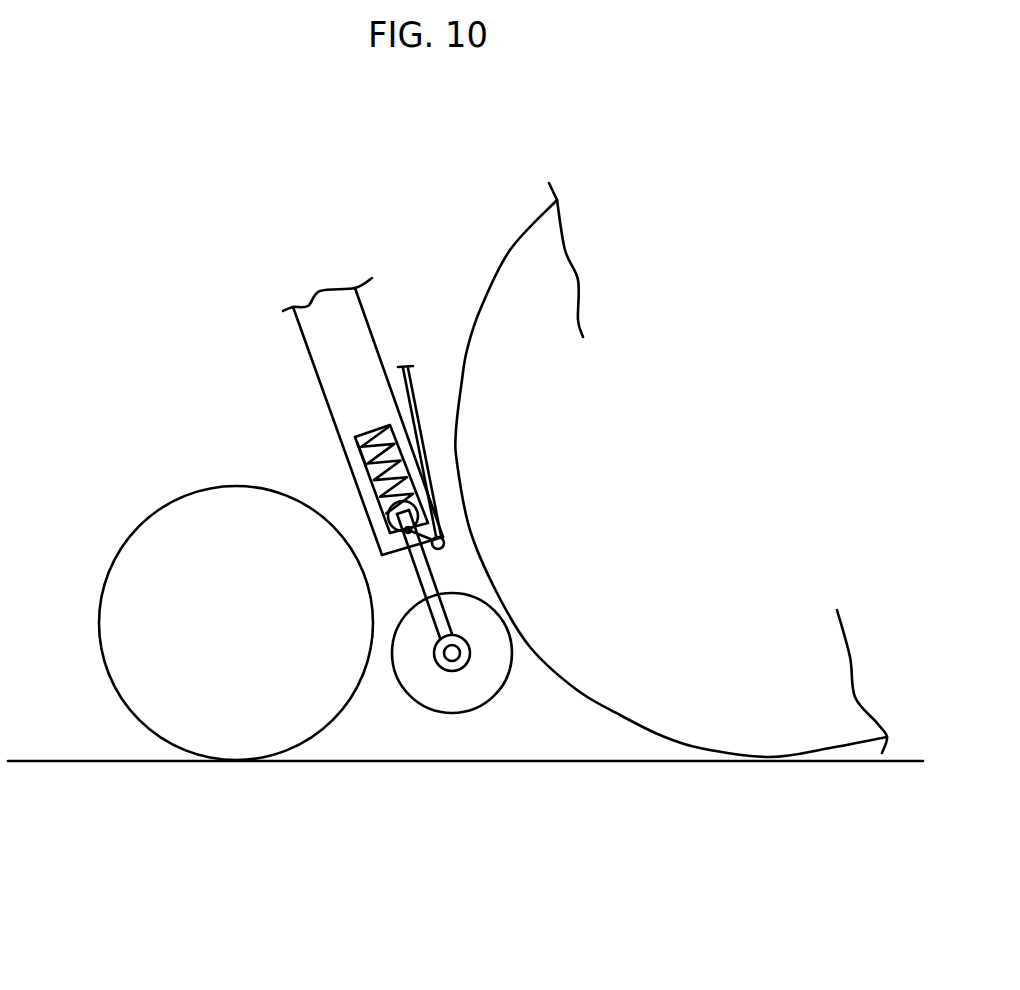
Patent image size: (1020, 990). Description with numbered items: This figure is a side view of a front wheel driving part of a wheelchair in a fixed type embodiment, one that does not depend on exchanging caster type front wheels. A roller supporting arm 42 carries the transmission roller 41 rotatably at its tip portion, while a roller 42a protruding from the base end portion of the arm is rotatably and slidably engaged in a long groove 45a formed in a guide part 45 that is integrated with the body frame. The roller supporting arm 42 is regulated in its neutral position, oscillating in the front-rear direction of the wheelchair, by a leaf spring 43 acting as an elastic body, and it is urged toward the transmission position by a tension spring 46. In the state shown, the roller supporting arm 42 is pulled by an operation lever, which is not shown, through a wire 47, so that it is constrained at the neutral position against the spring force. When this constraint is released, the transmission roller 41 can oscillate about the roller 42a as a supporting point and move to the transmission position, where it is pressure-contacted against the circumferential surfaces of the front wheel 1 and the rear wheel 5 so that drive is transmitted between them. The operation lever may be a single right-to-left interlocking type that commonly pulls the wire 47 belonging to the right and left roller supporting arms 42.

The front wheel 1 is at (510, 253).
The rear wheel 5 is at (110, 570).
The transmission roller 41 is at (508, 675).
The roller supporting arm 42 is at (440, 636).
The roller 42a is at (404, 528).
The leaf spring 43 is at (405, 553).
The guide part 45 is at (293, 337).
The long groove 45a is at (366, 452).
The tension spring 46 is at (383, 430).
The wire 47 is at (422, 417).